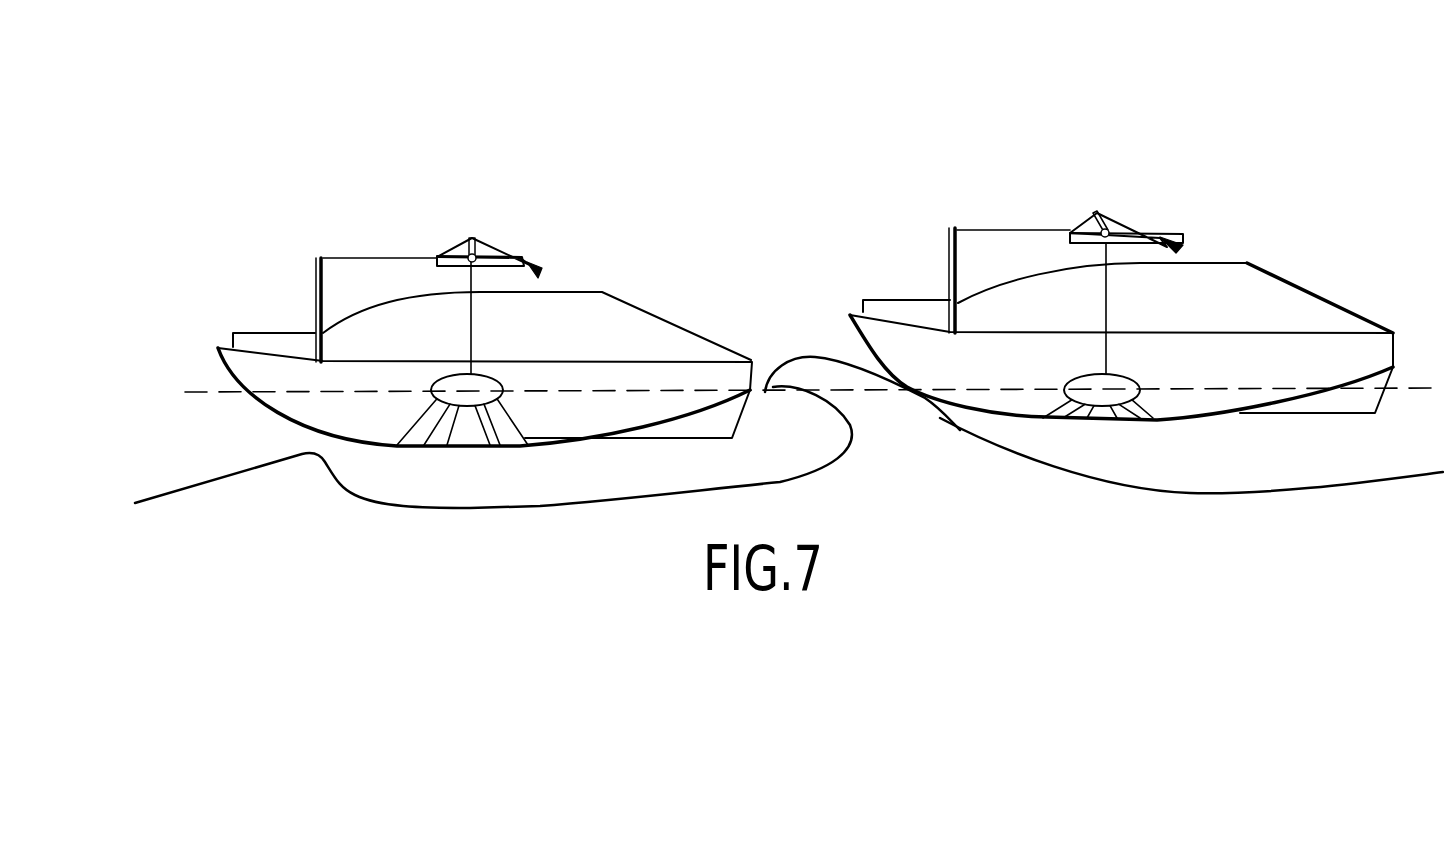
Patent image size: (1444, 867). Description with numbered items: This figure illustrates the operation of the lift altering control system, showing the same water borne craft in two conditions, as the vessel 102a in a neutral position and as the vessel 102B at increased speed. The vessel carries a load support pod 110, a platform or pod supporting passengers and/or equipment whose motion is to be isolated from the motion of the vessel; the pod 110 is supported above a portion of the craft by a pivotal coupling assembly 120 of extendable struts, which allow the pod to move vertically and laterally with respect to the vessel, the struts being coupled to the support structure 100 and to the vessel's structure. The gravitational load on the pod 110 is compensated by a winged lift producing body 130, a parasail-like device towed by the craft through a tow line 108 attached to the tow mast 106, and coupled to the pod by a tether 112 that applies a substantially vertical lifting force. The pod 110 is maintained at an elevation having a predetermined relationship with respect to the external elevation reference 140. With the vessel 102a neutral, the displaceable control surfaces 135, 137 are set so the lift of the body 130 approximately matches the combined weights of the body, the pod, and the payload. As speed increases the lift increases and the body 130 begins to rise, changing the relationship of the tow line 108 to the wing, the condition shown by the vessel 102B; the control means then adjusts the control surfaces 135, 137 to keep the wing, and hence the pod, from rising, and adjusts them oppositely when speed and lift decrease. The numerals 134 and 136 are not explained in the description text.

The support structure 100 is at (444, 135).
The vessel 102a is at (233, 333).
The vessel 102B is at (877, 298).
The tow mast 106 is at (315, 301).
The tow line 108 is at (338, 257).
The load support pod 110 is at (498, 381).
The tether 112 is at (471, 318).
The pivotal coupling assembly 120 is at (540, 416).
The winged lift producing body 130 is at (503, 190).
The sensor wing 134 is at (491, 246).
The displaceable control surface 135 is at (546, 268).
The sensor wing 136 is at (802, 238).
The displaceable control surface 137 is at (855, 257).
The external elevation reference 140 is at (190, 392).